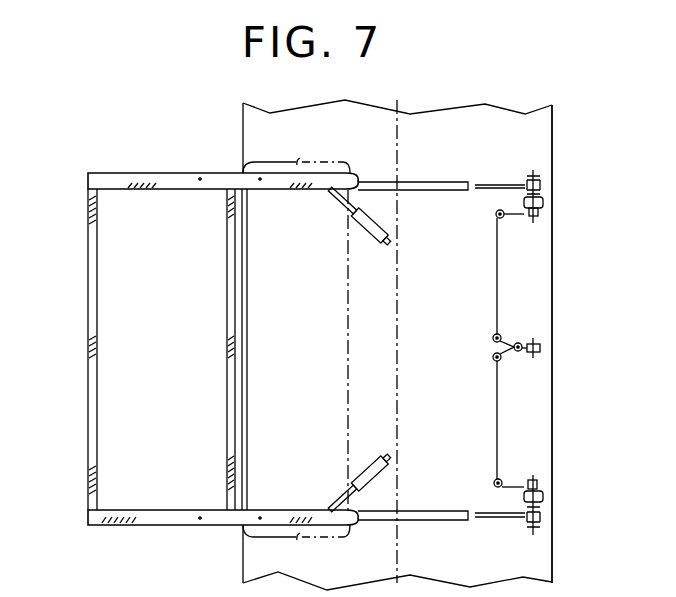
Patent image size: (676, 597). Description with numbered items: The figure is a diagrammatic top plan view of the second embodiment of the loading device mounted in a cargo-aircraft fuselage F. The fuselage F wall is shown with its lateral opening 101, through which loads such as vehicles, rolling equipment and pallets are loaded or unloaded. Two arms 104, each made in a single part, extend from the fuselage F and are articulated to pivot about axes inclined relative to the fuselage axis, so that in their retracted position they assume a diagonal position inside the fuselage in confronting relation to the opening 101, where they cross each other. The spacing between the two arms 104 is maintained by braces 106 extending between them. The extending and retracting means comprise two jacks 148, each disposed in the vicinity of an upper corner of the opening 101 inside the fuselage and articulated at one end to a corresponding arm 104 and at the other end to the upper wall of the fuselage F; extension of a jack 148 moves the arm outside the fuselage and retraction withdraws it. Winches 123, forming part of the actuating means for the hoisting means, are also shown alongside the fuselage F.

The opening 101 is at (310, 358).
The arm 104 is at (153, 178).
The brace 106 is at (92, 337).
The winch 123 is at (556, 204).
The jack 148 is at (374, 243).
The fuselage F is at (560, 300).